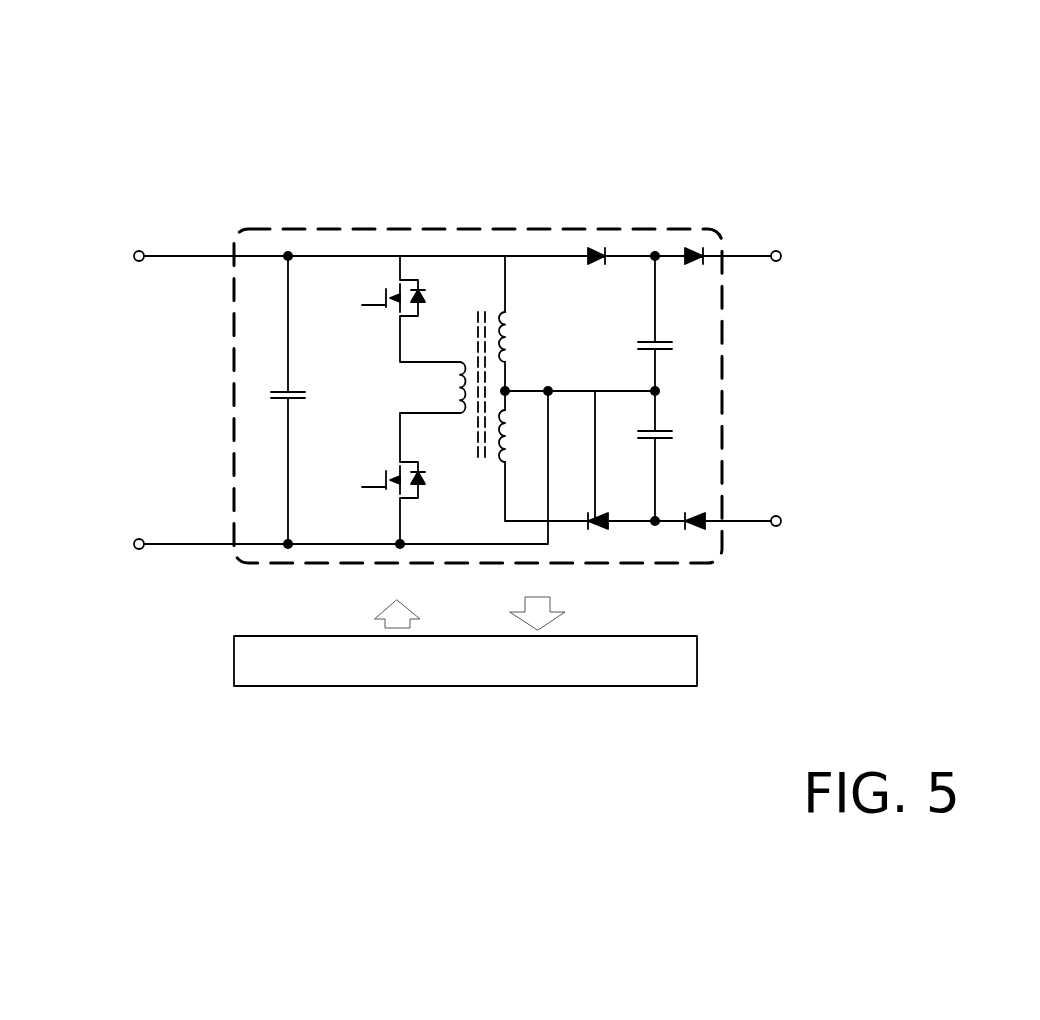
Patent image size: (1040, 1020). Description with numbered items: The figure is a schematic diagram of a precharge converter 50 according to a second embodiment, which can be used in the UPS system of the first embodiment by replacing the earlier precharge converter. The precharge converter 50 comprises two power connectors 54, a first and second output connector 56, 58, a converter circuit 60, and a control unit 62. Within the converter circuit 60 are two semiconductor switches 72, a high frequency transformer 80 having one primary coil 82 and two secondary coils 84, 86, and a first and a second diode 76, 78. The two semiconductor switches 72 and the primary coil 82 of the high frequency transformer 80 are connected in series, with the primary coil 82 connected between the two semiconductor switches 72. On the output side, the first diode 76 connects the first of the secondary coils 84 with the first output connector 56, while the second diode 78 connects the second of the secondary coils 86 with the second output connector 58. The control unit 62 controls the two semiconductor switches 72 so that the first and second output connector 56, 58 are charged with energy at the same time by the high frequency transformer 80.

The precharge converter 50 is at (828, 185).
The power connectors 54 is at (138, 538).
The first output connector 56 is at (776, 250).
The second output connector 58 is at (777, 515).
The converter circuit 60 is at (634, 224).
The control unit 62 is at (313, 650).
The semiconductor switches 72 is at (393, 462).
The first diode 76 is at (597, 256).
The second diode 78 is at (594, 395).
The high frequency transformer 80 is at (471, 292).
The primary coil 82 is at (462, 413).
The first secondary coil 84 is at (497, 312).
The second secondary coil 86 is at (495, 445).